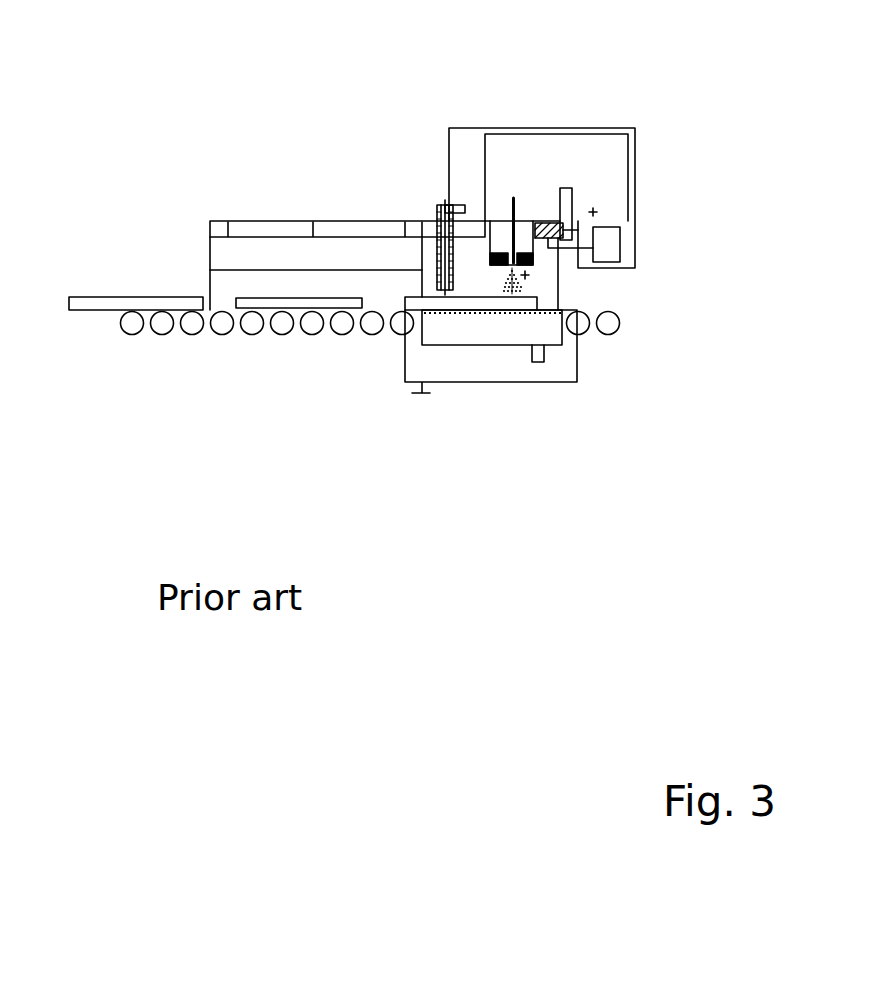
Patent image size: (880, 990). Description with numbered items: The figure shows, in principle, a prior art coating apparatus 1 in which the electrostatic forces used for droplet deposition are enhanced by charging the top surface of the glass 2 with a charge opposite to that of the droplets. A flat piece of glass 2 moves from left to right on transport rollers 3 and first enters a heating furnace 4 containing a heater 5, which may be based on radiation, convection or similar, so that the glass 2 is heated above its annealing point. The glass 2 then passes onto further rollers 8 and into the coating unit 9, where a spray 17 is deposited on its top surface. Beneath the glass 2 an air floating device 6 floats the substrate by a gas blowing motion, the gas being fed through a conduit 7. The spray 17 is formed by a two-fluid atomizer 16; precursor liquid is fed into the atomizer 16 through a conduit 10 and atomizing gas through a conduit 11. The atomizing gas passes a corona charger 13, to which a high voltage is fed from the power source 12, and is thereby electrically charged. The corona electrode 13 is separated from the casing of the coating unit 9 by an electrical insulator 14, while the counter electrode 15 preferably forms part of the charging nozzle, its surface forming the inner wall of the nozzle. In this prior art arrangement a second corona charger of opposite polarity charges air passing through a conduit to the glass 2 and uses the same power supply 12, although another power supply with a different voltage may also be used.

The coating apparatus 1 is at (372, 239).
The glass 2 is at (197, 297).
The transport rollers 3 is at (190, 338).
The heating furnace 4 is at (262, 218).
The heater 5 is at (347, 243).
The air floating device 6 is at (523, 355).
The conduit 7 is at (495, 355).
The transport rollers 8 is at (383, 337).
The coating unit 9 is at (497, 217).
The conduit 10 is at (513, 188).
The conduit 11 is at (568, 182).
The power source 12 is at (643, 217).
The corona charger 13 is at (527, 243).
The electrical insulator 14 is at (623, 129).
The counter electrode 15 is at (553, 240).
The two-fluid atomizer 16 is at (505, 270).
The spray 17 is at (528, 285).